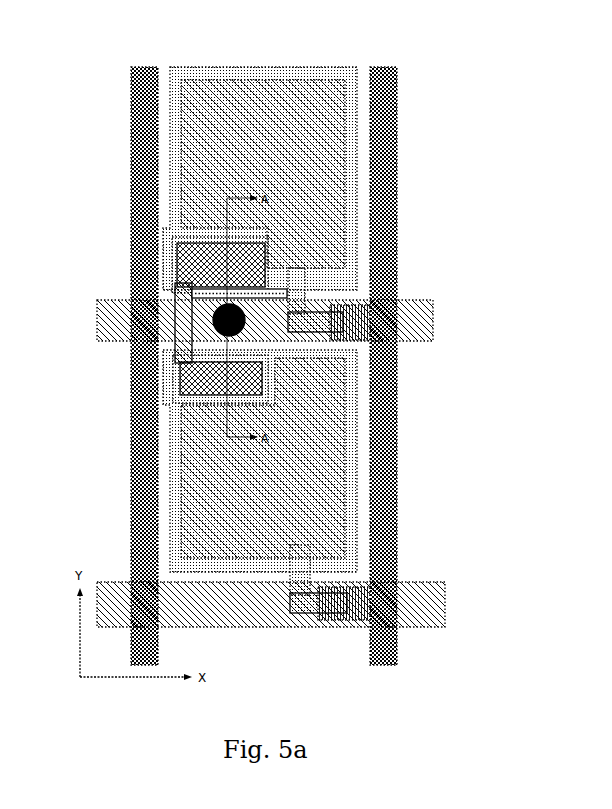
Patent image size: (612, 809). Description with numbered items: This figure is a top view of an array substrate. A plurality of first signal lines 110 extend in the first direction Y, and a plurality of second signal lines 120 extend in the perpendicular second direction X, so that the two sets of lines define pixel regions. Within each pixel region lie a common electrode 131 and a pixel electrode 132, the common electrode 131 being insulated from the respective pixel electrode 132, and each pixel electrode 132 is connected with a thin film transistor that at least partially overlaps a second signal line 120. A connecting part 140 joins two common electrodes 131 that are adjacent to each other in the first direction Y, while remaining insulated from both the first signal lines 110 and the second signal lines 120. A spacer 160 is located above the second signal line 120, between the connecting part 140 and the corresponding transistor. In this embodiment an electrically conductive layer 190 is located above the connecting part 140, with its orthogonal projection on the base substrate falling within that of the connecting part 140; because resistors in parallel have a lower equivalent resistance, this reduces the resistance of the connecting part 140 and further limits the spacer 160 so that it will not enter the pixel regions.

The first signal line 110 is at (382, 88).
The second signal line 120 is at (433, 300).
The common electrode 131 is at (247, 74).
The pixel electrode 132 is at (300, 80).
The connecting part 140 is at (166, 356).
The spacer 160 is at (262, 338).
The electrically conductive layer 190 is at (166, 403).